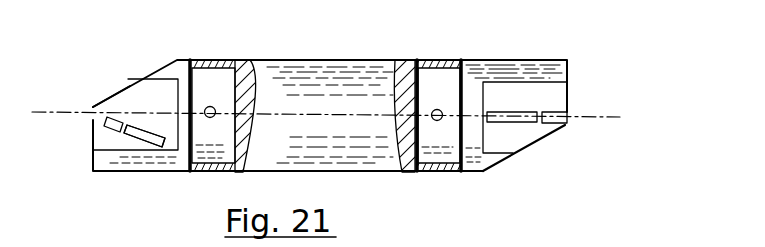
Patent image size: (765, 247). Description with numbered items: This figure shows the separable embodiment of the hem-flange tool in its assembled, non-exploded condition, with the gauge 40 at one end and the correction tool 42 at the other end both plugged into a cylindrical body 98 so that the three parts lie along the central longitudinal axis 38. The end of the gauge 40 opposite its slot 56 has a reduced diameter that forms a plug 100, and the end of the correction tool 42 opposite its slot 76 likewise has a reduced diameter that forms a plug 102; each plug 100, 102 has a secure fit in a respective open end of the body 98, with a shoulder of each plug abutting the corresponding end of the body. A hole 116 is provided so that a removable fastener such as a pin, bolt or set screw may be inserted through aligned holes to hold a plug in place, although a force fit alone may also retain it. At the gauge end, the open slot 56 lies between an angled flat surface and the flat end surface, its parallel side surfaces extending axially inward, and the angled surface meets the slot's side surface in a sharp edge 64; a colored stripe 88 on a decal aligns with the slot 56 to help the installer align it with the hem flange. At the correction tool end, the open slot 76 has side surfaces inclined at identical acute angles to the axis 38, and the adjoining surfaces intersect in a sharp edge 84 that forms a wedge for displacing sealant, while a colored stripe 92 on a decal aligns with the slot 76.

The gauge 40 is at (597, 88).
The correction tool 42 is at (110, 68).
The sharp edge 84 is at (95, 107).
The open slot 76 is at (110, 120).
The colored stripe 92 is at (163, 143).
The plug 102 is at (210, 78).
The hole 116 is at (217, 106).
The central longitudinal axis 38 is at (332, 113).
The cylindrical body 98 is at (386, 59).
The plug 100 is at (442, 153).
The open slot 56 is at (561, 125).
The colored stripe 88 is at (513, 117).
The sharp edge 64 is at (553, 118).